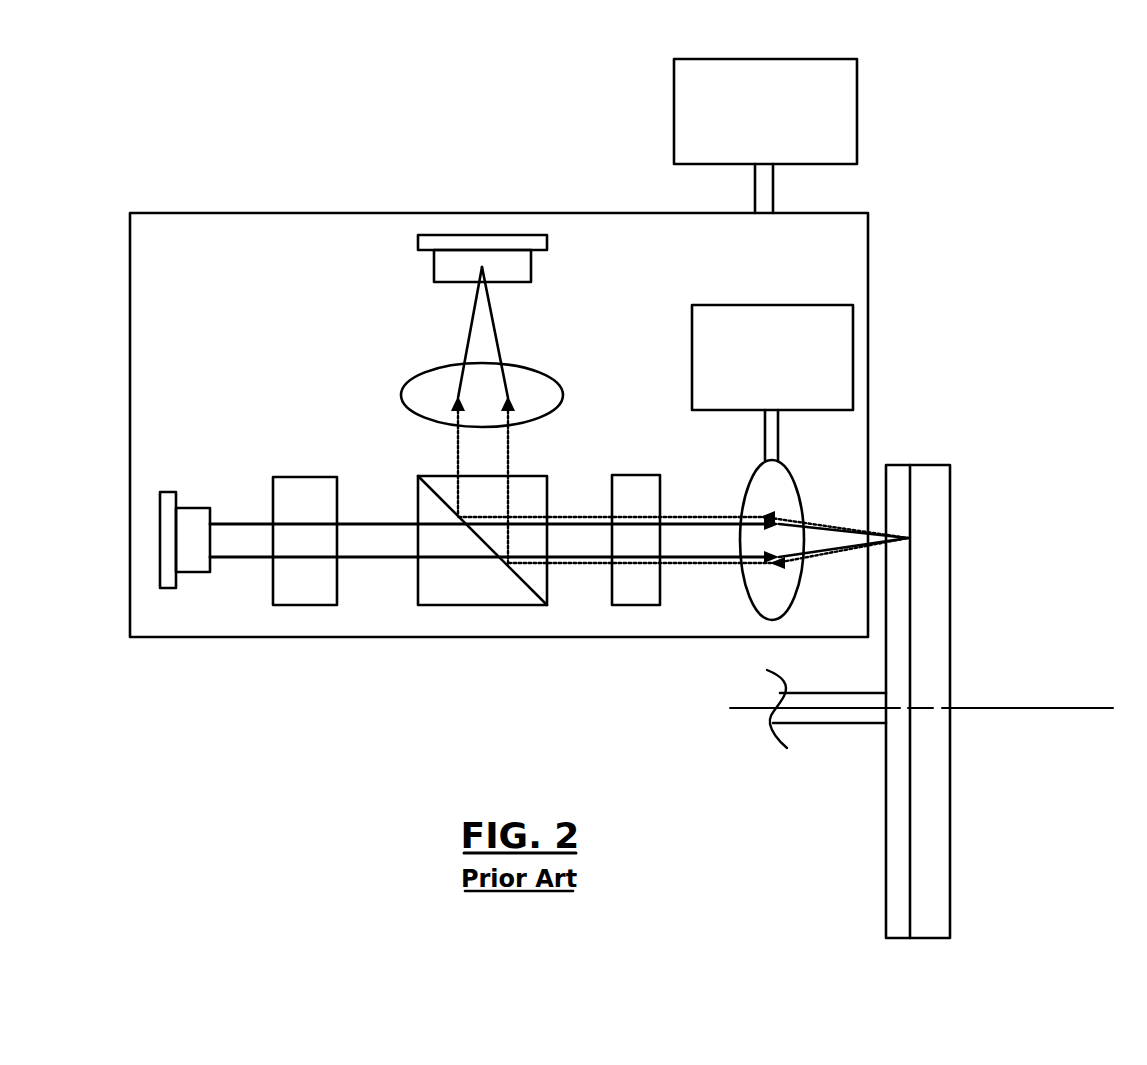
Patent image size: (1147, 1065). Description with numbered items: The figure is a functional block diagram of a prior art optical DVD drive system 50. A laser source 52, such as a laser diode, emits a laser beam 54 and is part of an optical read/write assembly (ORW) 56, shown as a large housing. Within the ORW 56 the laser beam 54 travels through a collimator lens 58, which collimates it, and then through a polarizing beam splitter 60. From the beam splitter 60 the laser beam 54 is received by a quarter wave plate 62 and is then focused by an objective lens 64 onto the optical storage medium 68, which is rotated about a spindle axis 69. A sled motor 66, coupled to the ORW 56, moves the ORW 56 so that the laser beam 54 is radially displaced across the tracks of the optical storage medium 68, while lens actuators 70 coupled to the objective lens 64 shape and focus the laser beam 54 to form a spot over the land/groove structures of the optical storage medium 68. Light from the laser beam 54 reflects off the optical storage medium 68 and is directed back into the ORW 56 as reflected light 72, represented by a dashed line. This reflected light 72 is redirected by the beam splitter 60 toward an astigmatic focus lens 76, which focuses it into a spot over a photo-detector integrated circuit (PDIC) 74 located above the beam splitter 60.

The optical DVD drive system 50 is at (890, 185).
The laser source 52 is at (167, 492).
The laser beam 54 is at (218, 520).
The optical read/write assembly (ORW) 56 is at (211, 213).
The collimator lens 58 is at (290, 477).
The polarizing beam splitter 60 is at (527, 476).
The quarter wave plate 62 is at (610, 475).
The objective lens 64 is at (797, 470).
The sled motor 66 is at (766, 59).
The optical storage medium 68 is at (910, 465).
The spindle axis 69 is at (1057, 708).
The lens actuators 70 is at (714, 305).
The reflected light 72 is at (673, 512).
The photo-detector integrated circuit (PDIC) 74 is at (543, 250).
The astigmatic focus lens 76 is at (537, 367).